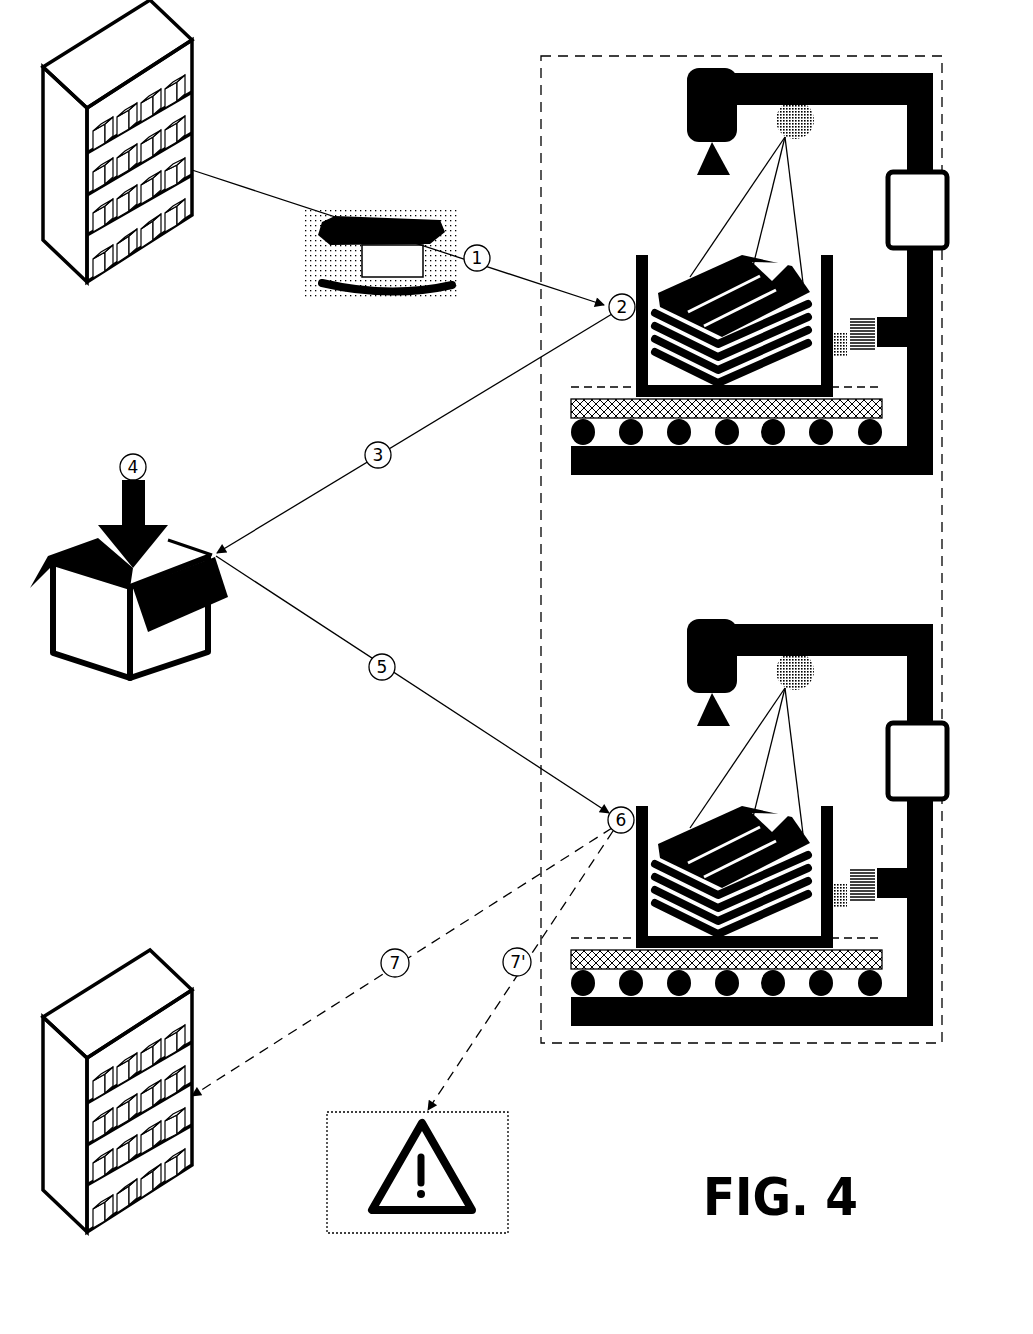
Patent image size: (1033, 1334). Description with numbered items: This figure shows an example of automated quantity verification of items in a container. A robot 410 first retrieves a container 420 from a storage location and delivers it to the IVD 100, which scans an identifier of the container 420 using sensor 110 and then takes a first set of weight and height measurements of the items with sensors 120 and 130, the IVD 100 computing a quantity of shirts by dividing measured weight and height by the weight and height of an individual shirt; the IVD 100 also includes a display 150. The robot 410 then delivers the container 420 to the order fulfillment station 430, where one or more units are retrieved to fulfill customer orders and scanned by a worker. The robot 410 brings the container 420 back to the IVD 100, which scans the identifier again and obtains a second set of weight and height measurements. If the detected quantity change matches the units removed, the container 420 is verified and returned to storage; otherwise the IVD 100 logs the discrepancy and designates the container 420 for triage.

The IVD 100 is at (541, 56).
The sensor 110 is at (886, 312).
The sensor 120 is at (566, 438).
The sensor 130 is at (814, 135).
The display 150 is at (886, 200).
The robot 410 is at (374, 274).
The container 420 is at (178, 162).
The order fulfillment station 430 is at (113, 707).